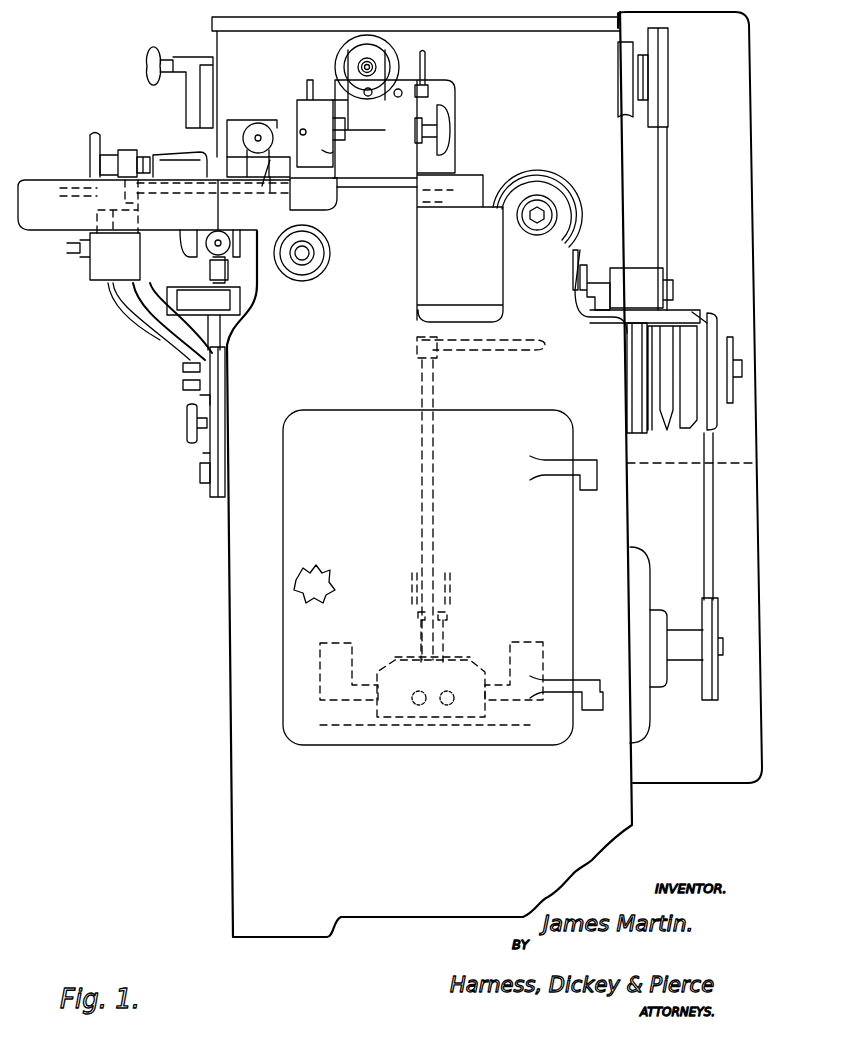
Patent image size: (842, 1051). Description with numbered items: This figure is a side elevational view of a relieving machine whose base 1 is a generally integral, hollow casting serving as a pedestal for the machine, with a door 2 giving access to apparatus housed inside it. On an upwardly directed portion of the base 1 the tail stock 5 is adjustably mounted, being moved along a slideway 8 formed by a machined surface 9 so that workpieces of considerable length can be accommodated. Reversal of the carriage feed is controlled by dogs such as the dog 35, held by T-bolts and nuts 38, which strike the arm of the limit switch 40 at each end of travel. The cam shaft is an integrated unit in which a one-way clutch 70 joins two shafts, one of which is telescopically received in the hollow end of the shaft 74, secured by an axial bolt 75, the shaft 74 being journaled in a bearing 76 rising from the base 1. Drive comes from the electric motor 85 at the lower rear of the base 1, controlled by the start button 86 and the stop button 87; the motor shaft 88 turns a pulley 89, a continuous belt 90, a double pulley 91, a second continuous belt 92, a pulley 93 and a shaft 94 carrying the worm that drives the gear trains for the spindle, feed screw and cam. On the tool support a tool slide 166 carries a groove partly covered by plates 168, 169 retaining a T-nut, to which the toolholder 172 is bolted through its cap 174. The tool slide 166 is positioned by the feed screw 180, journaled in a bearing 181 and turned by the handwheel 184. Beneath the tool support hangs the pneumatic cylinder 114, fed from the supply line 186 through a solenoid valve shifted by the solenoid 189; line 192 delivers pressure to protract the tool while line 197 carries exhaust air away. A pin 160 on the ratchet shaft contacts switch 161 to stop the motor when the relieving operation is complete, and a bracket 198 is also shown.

The base 1 is at (227, 540).
The door 2 is at (352, 415).
The tail stock 5 is at (334, 152).
The slideway 8 is at (333, 130).
The machined surface 9 is at (334, 170).
The dog 35 is at (583, 283).
The nuts 38 is at (580, 252).
The limit switch 40 is at (645, 268).
The one-way clutch 70 is at (530, 172).
The shaft 74 is at (525, 220).
The bolt 75 is at (538, 225).
The bearing 76 is at (547, 180).
The electric motor 85 is at (633, 556).
The start button 86 is at (200, 396).
The stop button 87 is at (203, 455).
The motor shaft 88 is at (660, 638).
The pulley 89 is at (718, 612).
The continuous belt 90 is at (711, 525).
The double pulley 91 is at (692, 310).
The continuous belt 92 is at (667, 176).
The pulley 93 is at (668, 55).
The shaft 94 is at (638, 83).
The cylinder 114 is at (117, 290).
The pin 160 is at (210, 263).
The switch 161 is at (210, 276).
The tool slide 166 is at (172, 152).
The plate 168 is at (228, 162).
The plate 169 is at (270, 178).
The toolholder 172 is at (232, 138).
The cap 174 is at (236, 122).
The feed screw 180 is at (145, 157).
The bearing 181 is at (126, 150).
The handwheel 184 is at (90, 132).
The supply line 186 is at (433, 470).
The solenoid 189 is at (522, 642).
The line 192 is at (176, 345).
The line 197 is at (145, 332).
The contact bracket 198 is at (334, 647).